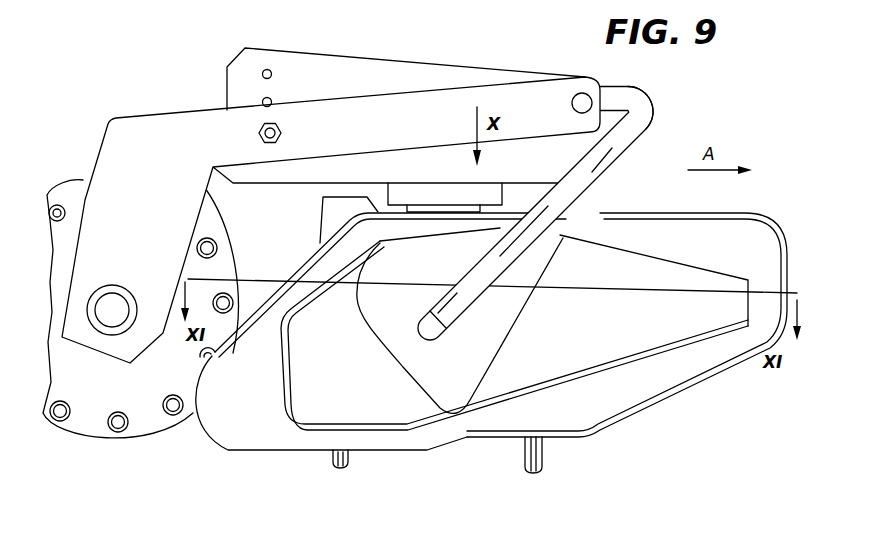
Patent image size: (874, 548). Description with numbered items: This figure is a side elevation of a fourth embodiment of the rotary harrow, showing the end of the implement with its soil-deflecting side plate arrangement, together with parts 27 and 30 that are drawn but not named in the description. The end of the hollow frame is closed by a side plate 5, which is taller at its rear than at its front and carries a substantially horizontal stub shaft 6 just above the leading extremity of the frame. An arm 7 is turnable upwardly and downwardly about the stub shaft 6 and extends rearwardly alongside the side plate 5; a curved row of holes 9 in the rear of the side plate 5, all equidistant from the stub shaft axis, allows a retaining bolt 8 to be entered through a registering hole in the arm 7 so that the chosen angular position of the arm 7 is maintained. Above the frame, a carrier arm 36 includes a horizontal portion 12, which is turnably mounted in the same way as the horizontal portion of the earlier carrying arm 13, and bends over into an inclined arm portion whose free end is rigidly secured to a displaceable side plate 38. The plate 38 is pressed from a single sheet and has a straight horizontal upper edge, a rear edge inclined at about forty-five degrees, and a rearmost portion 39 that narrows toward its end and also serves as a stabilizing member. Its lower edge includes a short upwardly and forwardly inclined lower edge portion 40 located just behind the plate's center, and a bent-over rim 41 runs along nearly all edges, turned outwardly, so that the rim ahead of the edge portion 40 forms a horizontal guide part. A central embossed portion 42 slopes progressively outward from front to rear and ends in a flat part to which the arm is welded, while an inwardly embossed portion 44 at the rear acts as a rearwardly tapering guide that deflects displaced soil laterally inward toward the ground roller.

The side plate 5 is at (346, 62).
The stub shaft 6 is at (580, 94).
The arm 7 is at (142, 130).
The retaining bolt 8 is at (282, 131).
The holes 9 is at (272, 74).
The horizontal portion 12 is at (620, 72).
The carrying arm 13 is at (380, 300).
The support bracket 27 is at (582, 166).
The housing body 30 is at (123, 446).
The carrier arm 36 is at (658, 105).
The displaceable side plate 38 is at (672, 187).
The rearmost portion 39 is at (250, 423).
The inclined lower edge portion 40 is at (462, 442).
The bent-over rim 41 is at (516, 437).
The central embossed portion 42 is at (688, 330).
The inwardly embossed portion 44 is at (300, 380).